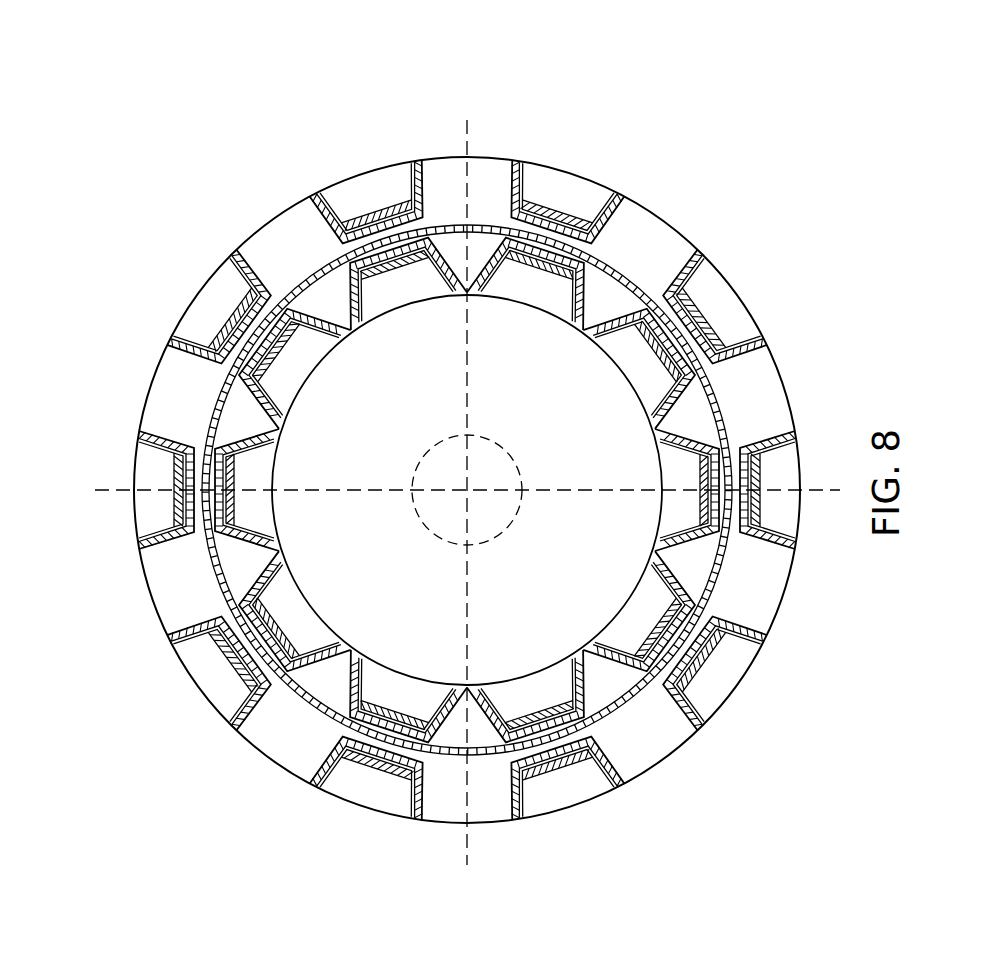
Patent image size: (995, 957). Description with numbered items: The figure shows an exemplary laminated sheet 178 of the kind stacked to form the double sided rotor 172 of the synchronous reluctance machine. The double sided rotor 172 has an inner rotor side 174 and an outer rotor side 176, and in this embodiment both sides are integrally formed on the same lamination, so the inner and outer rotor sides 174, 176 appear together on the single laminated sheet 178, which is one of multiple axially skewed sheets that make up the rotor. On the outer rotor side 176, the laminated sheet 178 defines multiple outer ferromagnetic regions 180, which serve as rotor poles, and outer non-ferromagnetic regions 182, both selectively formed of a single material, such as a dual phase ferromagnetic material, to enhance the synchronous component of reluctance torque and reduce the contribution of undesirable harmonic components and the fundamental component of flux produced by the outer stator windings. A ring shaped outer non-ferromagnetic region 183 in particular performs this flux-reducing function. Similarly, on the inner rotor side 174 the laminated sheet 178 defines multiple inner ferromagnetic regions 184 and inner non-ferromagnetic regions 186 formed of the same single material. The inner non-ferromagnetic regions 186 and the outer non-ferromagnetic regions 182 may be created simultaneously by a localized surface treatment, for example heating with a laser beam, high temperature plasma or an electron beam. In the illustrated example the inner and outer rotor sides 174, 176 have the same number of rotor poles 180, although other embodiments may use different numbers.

The laminated sheet 178 is at (106, 131).
The double sided rotor 172 is at (266, 226).
The inner rotor side 174 is at (320, 300).
The outer rotor side 176 is at (442, 192).
The outer ferromagnetic regions 180 is at (268, 682).
The outer non-ferromagnetic regions 182 is at (167, 447).
The ring shaped outer non-ferromagnetic region 183 is at (620, 267).
The inner ferromagnetic regions 184 is at (297, 370).
The inner non-ferromagnetic regions 186 is at (360, 697).